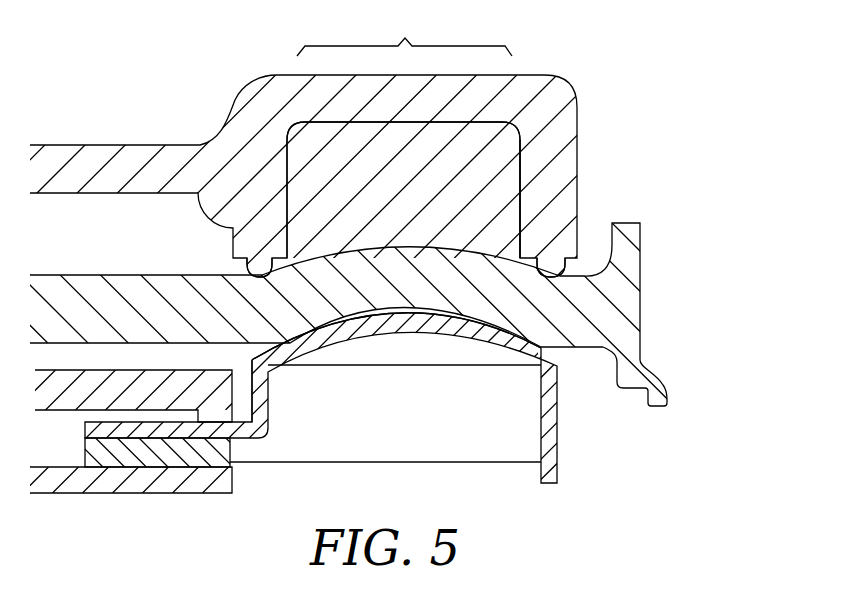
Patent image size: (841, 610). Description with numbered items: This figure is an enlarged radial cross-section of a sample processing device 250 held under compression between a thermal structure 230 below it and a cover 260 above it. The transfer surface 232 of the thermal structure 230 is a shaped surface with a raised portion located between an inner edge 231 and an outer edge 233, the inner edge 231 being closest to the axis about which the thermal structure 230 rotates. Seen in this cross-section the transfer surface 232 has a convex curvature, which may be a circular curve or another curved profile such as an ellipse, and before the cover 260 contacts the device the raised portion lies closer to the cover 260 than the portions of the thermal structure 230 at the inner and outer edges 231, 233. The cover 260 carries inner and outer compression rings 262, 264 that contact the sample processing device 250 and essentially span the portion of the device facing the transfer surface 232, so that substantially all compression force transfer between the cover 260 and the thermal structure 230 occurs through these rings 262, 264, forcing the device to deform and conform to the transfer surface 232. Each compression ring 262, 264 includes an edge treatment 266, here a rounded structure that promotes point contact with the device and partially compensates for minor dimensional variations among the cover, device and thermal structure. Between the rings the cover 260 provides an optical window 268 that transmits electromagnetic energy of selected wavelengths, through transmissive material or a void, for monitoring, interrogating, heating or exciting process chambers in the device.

The thermal structure 230 is at (558, 470).
The inner edge 231 is at (257, 357).
The transfer surface 232 is at (393, 307).
The outer edge 233 is at (555, 362).
The sample processing device 250 is at (122, 275).
The cover 260 is at (577, 122).
The inner compression ring 262 is at (288, 168).
The outer compression ring 264 is at (520, 203).
The edge treatment 266 is at (272, 268).
The optical window 268 is at (404, 33).